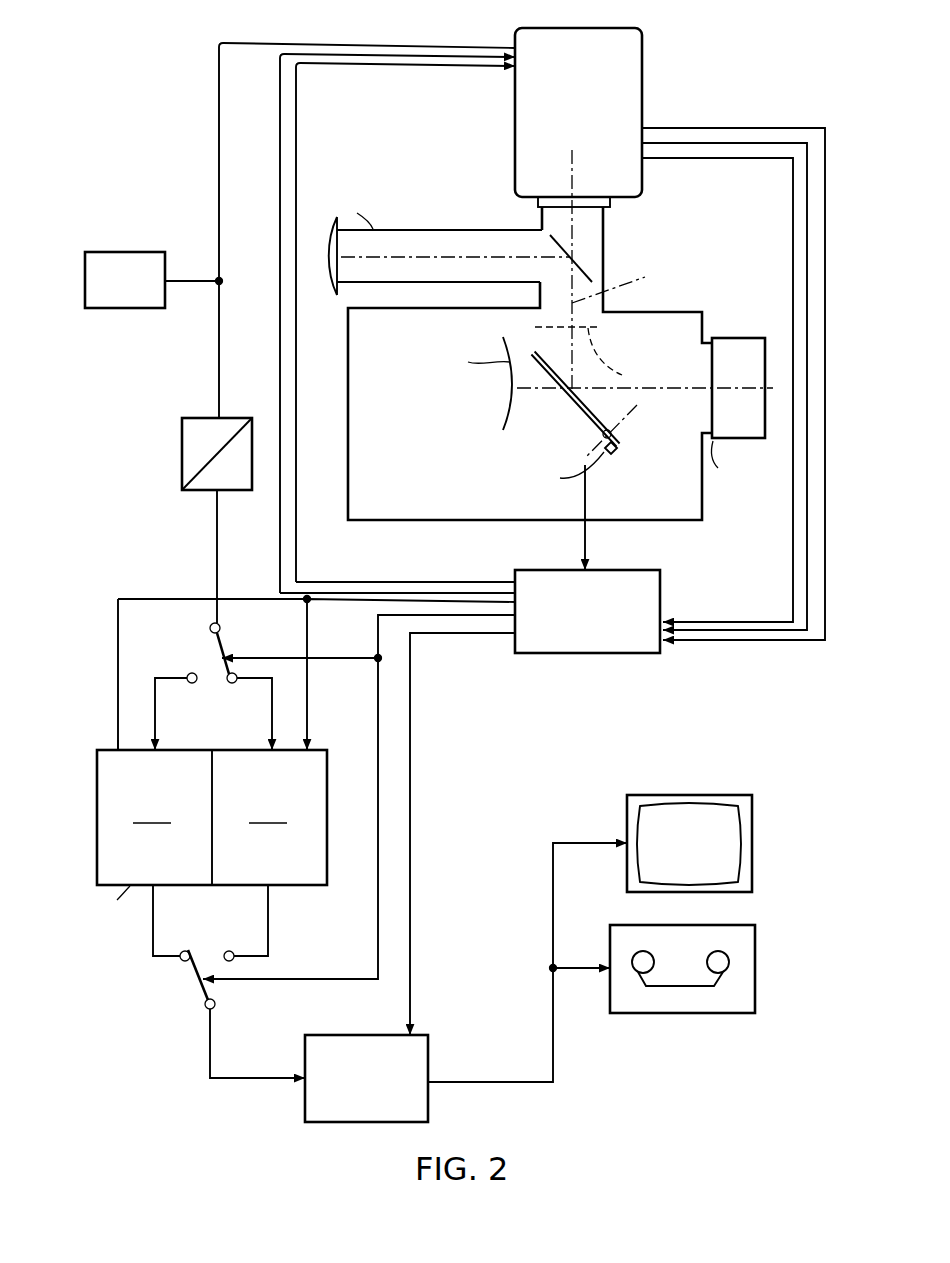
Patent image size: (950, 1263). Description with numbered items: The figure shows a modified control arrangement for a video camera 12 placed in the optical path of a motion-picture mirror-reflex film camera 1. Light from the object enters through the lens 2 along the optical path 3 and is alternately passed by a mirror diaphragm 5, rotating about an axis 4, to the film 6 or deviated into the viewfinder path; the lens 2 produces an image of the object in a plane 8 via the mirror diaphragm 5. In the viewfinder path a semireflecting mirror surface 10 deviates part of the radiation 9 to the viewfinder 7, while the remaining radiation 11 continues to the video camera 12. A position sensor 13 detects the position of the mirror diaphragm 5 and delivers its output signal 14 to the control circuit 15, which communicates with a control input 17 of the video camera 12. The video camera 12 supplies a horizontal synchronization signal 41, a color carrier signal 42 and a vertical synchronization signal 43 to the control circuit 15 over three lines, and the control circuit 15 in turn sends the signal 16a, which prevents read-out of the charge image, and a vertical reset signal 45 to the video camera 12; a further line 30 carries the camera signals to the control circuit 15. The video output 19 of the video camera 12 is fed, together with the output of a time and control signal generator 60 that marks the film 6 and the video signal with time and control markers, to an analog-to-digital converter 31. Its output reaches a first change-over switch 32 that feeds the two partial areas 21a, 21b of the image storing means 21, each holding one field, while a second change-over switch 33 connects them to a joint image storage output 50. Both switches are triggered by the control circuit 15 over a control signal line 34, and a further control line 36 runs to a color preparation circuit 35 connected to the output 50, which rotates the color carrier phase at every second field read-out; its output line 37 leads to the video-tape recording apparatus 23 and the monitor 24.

The film camera 1 is at (681, 340).
The lens 2 is at (744, 338).
The optical path 3 is at (701, 389).
The axis 4 is at (621, 413).
The mirror diaphragm 5 is at (555, 372).
The film 6 is at (510, 400).
The viewfinder 7 is at (409, 229).
The plane 8 is at (588, 356).
The light path to viewfinder 9 is at (648, 276).
The semireflecting mirror surface 10 is at (583, 260).
The remaining radiation 11 is at (577, 221).
The video camera 12 is at (643, 100).
The position sensor 13 is at (612, 455).
The output signal 14 is at (589, 551).
The control circuit 15 is at (663, 585).
The signal 16a is at (483, 582).
The control input 17 is at (487, 67).
The video output 19 is at (218, 382).
The image storing means 21 is at (202, 828).
The partial area 21a is at (152, 811).
The partial area 21b is at (268, 811).
The video-tape recording apparatus 23 is at (701, 1014).
The monitor 24 is at (678, 795).
The video signal line 30 is at (384, 580).
The analog-to-digital converter 31 is at (182, 430).
The first change-over switch 32 is at (220, 640).
The second change-over switch 33 is at (190, 972).
The control signal line 34 is at (378, 628).
The color preparation circuit 35 is at (305, 1052).
The control line 36 is at (412, 905).
The output line 37 is at (525, 1084).
The horizontal synchronization signal 41 is at (727, 159).
The color carrier signal 42 is at (763, 144).
The vertical synchronization signal 43 is at (772, 128).
The vertical reset signal 45 is at (418, 57).
The joint image storage output 50 is at (210, 1040).
The time and control signal generator 60 is at (145, 252).